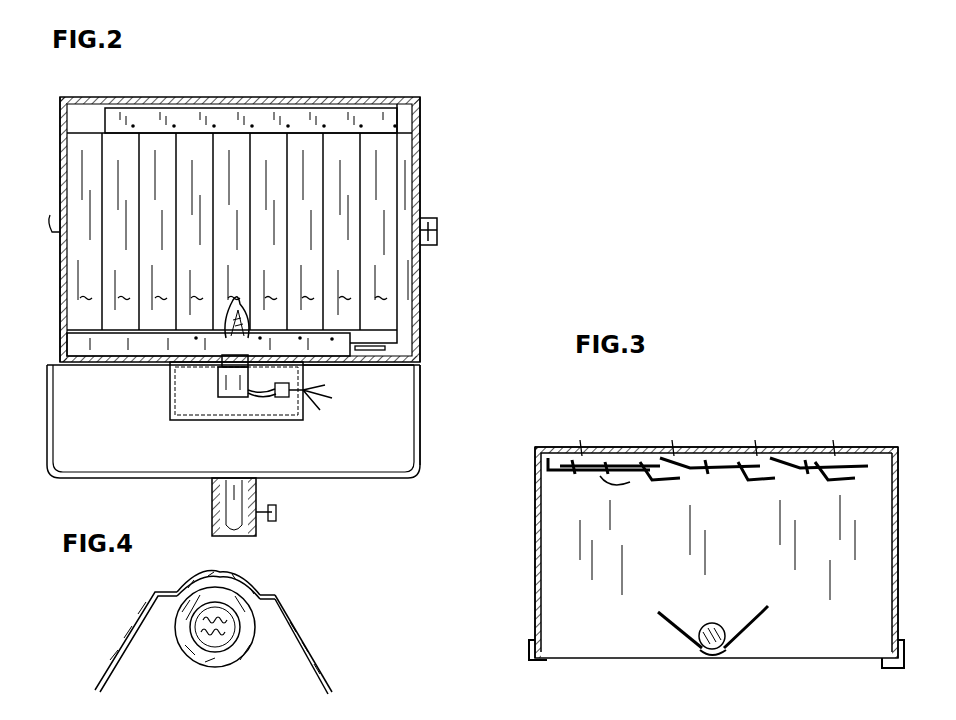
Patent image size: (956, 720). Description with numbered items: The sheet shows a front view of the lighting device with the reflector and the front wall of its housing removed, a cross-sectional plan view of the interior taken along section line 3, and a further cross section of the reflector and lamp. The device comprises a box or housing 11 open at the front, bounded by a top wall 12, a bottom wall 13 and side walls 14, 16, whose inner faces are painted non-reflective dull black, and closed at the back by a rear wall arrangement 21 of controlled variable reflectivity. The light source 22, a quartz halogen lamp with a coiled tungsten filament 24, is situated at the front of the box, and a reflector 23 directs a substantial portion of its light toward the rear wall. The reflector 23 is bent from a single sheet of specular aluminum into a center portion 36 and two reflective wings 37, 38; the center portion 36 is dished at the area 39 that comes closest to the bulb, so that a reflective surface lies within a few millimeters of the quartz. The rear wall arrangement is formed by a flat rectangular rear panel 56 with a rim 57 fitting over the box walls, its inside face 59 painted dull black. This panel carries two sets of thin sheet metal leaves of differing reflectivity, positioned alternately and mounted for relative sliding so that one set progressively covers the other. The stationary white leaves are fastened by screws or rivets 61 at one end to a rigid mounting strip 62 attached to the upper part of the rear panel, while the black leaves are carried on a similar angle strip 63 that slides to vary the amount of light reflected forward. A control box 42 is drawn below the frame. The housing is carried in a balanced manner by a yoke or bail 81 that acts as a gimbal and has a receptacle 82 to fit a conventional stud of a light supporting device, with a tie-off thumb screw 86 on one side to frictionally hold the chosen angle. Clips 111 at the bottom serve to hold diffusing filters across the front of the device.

In FIG. 2, the section line 3- 3 is at (52, 141).
In FIG. 2, the box or housing 11 is at (452, 230).
In FIG. 3, the box or housing 11 is at (722, 432).
In FIG. 2, the top wall 12 is at (98, 100).
In FIG. 2, the bottom wall 13 is at (373, 367).
In FIG. 3, the bottom wall 13 is at (747, 556).
In FIG. 2, the side wall 14 is at (60, 128).
In FIG. 3, the side wall 14 is at (542, 560).
In FIG. 2, the side wall 16 is at (420, 135).
In FIG. 3, the side wall 16 is at (892, 566).
In FIG. 3, the rear wall arrangement 21 is at (605, 484).
In FIG. 2, the light source 22 is at (258, 321).
In FIG. 4, the light source 22 is at (232, 682).
In FIG. 3, the light source 22 is at (718, 624).
In FIG. 3, the reflector 23 is at (760, 639).
In FIG. 2, the tungsten filament 24 is at (215, 373).
In FIG. 4, the tungsten filament 24 is at (195, 650).
In FIG. 4, the center portion 36 is at (270, 595).
In FIG. 3, the center portion 36 is at (722, 660).
In FIG. 4, the reflective wing 37 is at (118, 640).
In FIG. 3, the reflective wing 37 is at (767, 610).
In FIG. 4, the reflective wing 38 is at (312, 640).
In FIG. 3, the reflective wing 38 is at (662, 612).
In FIG. 4, the dished area 39 is at (222, 576).
In FIG. 2, the control box 42 is at (280, 420).
In FIG. 3, the rear panel 56 is at (800, 458).
In FIG. 3, the rim 57 is at (535, 452).
In FIG. 3, the inside face 59 is at (548, 455).
In FIG. 2, the screws or rivets 61 is at (160, 125).
In FIG. 2, the mounting strip 62 is at (280, 118).
In FIG. 2, the angle strip 63 is at (158, 348).
In FIG. 2, the yoke or bail 81 is at (425, 370).
In FIG. 2, the receptacle 82 is at (236, 478).
In FIG. 2, the tie-off thumb screw 86 is at (437, 248).
In FIG. 3, the clips 111 is at (540, 662).